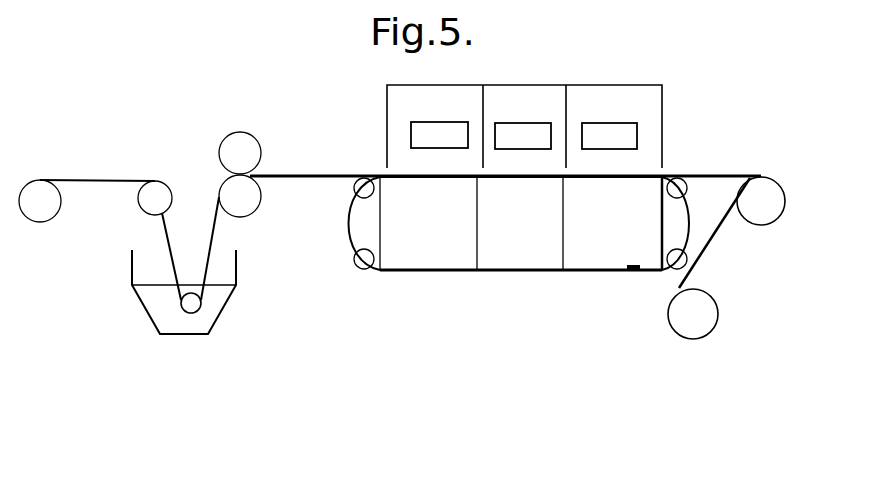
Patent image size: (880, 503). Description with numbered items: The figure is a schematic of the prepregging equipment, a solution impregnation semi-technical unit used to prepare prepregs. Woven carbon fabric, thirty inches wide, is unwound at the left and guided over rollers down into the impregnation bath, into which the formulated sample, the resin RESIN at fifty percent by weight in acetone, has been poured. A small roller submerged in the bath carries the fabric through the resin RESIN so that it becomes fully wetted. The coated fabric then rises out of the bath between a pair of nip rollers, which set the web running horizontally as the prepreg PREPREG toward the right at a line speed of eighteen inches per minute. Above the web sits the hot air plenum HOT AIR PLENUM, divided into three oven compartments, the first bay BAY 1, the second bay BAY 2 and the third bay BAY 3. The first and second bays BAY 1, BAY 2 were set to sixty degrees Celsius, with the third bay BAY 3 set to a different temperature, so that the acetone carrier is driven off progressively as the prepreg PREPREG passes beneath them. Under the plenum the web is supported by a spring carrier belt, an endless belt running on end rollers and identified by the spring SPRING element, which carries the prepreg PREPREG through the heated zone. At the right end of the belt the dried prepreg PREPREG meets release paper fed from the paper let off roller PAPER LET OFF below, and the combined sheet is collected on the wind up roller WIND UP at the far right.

The hot air plenum HOT AIR PLENUM is at (393, 126).
The oven bay 1 BAY 1 is at (439, 123).
The oven bay 2 BAY 2 is at (525, 124).
The oven bay 3 BAY 3 is at (611, 124).
The prepreg PREPREG is at (303, 188).
The resin RESIN is at (162, 314).
The spring SPRING is at (401, 276).
The wind up WIND UP is at (761, 186).
The paper let off PAPER LET OFF is at (740, 277).